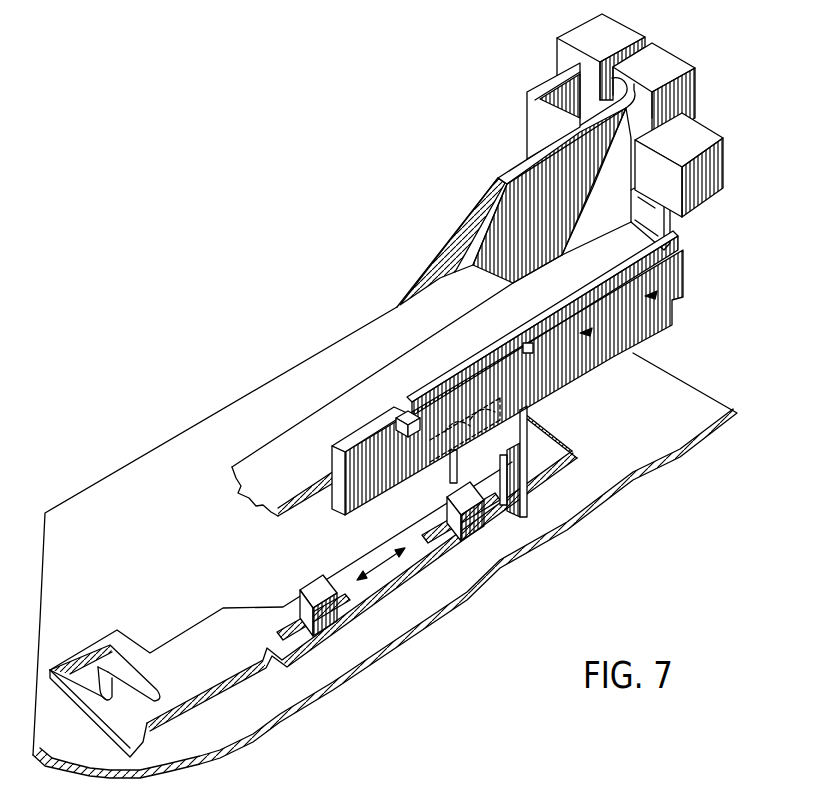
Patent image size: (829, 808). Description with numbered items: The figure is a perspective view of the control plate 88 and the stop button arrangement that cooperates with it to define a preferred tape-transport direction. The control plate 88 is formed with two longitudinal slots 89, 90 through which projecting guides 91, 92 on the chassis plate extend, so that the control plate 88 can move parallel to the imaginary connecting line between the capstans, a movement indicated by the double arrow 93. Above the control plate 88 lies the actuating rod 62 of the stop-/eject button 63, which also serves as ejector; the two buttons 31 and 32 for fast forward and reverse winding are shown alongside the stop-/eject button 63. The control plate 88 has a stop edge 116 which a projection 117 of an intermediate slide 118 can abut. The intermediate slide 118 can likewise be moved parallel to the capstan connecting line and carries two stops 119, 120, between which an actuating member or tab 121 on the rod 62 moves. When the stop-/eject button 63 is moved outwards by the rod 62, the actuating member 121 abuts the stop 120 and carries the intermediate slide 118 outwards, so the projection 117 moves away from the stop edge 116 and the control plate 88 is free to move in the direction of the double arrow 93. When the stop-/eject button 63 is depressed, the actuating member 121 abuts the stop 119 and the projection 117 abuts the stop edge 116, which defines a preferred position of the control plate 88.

The button 31 is at (630, 38).
The button 32 is at (677, 70).
The stop-/eject button 63 is at (703, 199).
The actuating rod 62 is at (455, 347).
The actuating member 121 is at (400, 410).
The stop 120 is at (530, 350).
The intermediate slide 118 is at (553, 373).
The stop 119 is at (369, 461).
The projection 117 is at (518, 497).
The stop edge 116 is at (497, 513).
The projecting guide 91 is at (465, 527).
The longitudinal slot 89 is at (440, 540).
The control plate 88 is at (387, 578).
The projecting guide 92 is at (327, 610).
The longitudinal slot 90 is at (290, 628).
The double arrow 93 is at (380, 560).